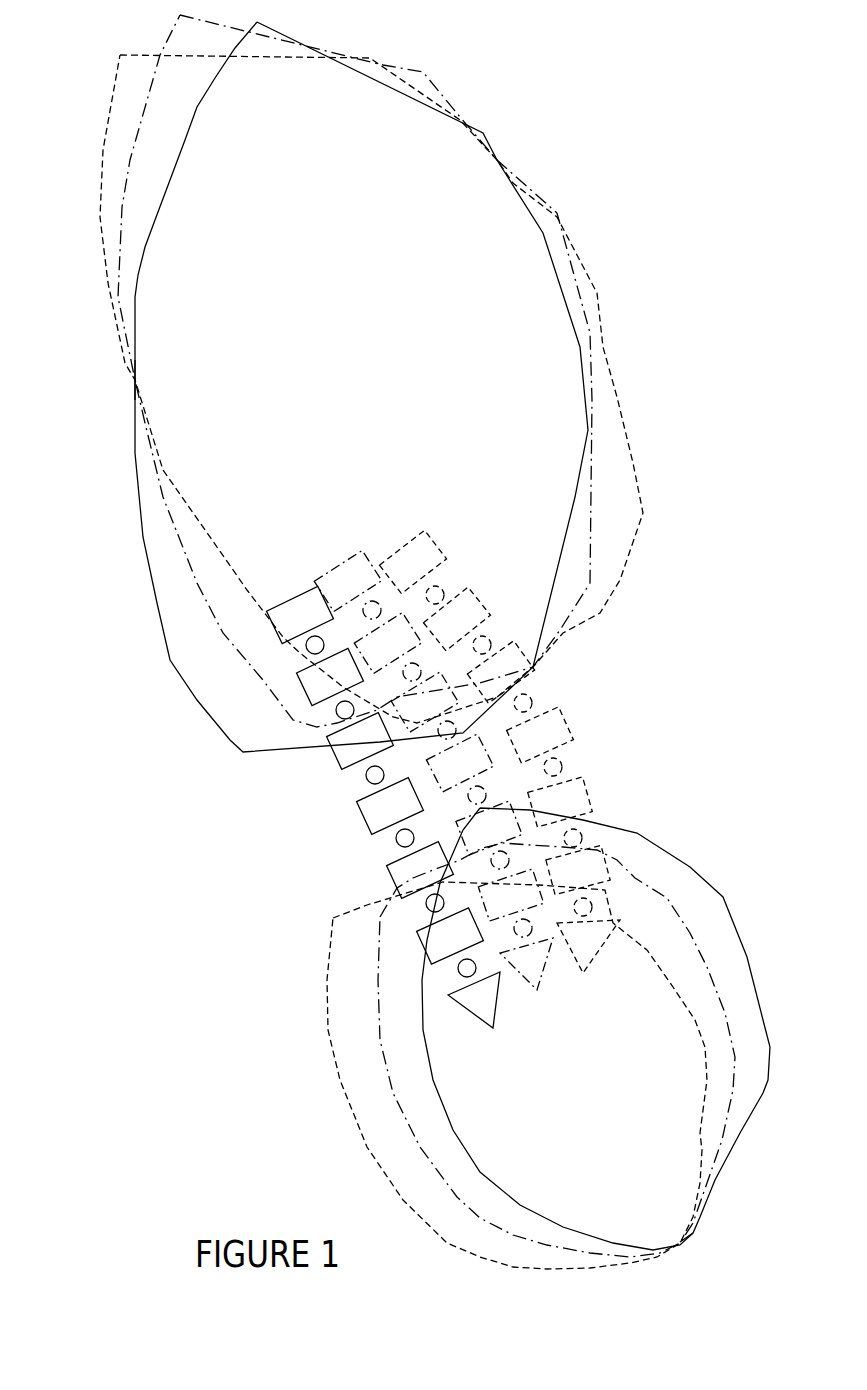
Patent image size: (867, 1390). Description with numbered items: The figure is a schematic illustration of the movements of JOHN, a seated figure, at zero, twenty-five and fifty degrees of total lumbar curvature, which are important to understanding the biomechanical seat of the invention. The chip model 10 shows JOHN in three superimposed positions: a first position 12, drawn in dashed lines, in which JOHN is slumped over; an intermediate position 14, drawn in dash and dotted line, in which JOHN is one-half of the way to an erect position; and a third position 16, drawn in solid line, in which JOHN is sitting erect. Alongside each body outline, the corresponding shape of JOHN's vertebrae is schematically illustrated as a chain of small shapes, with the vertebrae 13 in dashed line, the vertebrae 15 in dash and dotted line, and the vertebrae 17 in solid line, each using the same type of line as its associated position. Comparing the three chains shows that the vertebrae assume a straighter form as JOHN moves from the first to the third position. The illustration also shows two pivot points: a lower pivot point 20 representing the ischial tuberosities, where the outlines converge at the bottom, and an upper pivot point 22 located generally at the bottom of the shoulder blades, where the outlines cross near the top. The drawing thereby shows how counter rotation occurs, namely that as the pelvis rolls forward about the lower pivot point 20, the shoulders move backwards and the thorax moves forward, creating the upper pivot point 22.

The chip model 10 is at (610, 118).
The first position 12 is at (247, 590).
The vertebrae shape in first position 13 is at (565, 731).
The intermediate position 14 is at (203, 600).
The vertebrae shape in intermediate position 15 is at (490, 743).
The third position 16 is at (575, 497).
The vertebrae shape in third position 17 is at (372, 815).
The lower pivot point 20 is at (723, 1261).
The upper pivot point 22 is at (135, 380).